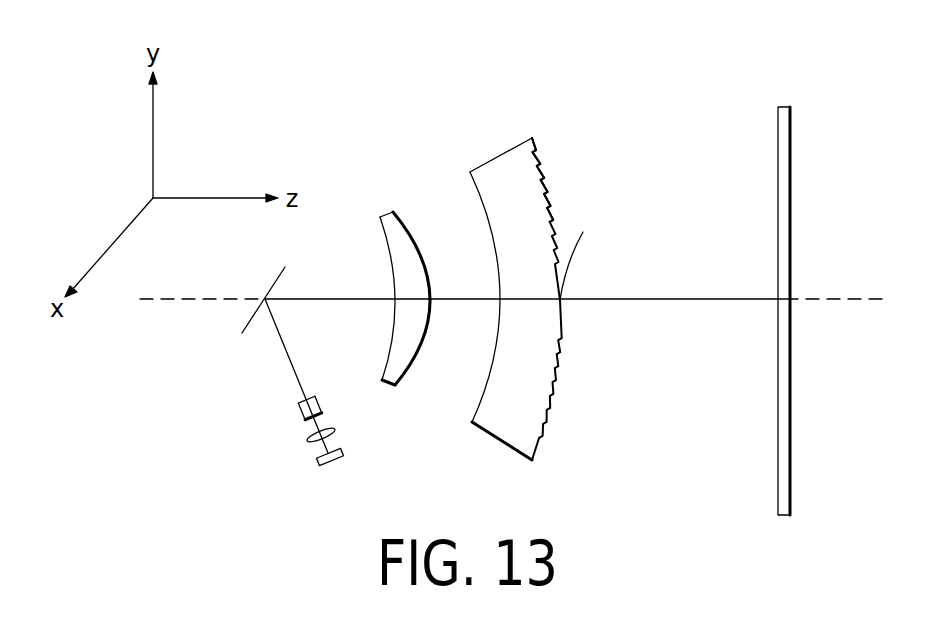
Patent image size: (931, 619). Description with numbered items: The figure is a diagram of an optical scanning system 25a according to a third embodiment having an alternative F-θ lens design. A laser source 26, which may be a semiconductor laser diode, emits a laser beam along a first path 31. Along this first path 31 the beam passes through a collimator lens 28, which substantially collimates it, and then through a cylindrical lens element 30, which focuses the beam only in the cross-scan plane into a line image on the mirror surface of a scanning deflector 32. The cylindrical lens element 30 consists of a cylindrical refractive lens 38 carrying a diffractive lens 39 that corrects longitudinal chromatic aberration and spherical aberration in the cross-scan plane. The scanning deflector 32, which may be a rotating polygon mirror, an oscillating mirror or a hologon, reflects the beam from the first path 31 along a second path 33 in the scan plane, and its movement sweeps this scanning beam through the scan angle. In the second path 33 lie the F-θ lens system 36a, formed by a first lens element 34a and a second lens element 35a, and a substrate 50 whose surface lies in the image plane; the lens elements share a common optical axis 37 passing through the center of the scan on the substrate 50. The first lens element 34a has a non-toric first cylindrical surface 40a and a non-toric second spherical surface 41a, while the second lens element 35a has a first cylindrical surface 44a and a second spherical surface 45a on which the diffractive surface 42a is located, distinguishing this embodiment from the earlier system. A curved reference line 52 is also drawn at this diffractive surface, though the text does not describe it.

The optical scanning system 25a is at (482, 268).
The laser source 26 is at (310, 465).
The collimator lens 28 is at (340, 430).
The cylindrical lens element 30 is at (313, 396).
The first path 31 is at (283, 345).
The scanning deflector 32 is at (258, 307).
The second path 33 is at (322, 298).
The first lens element 34a is at (343, 158).
The second lens element 35a is at (455, 120).
The F-θ lens system 36a is at (333, 66).
The optical axis 37 is at (815, 299).
The cylindrical refractive lens 38 is at (330, 412).
The diffractive lens 39 is at (319, 399).
The first cylindrical surface 40a is at (383, 241).
The second spherical surface 41a is at (417, 242).
The diffractive surface 42a is at (548, 215).
The first cylindrical surface 44a is at (476, 400).
The second spherical surface 45a is at (538, 137).
The substrate 50 is at (777, 137).
The reference surface curve 52 is at (582, 252).